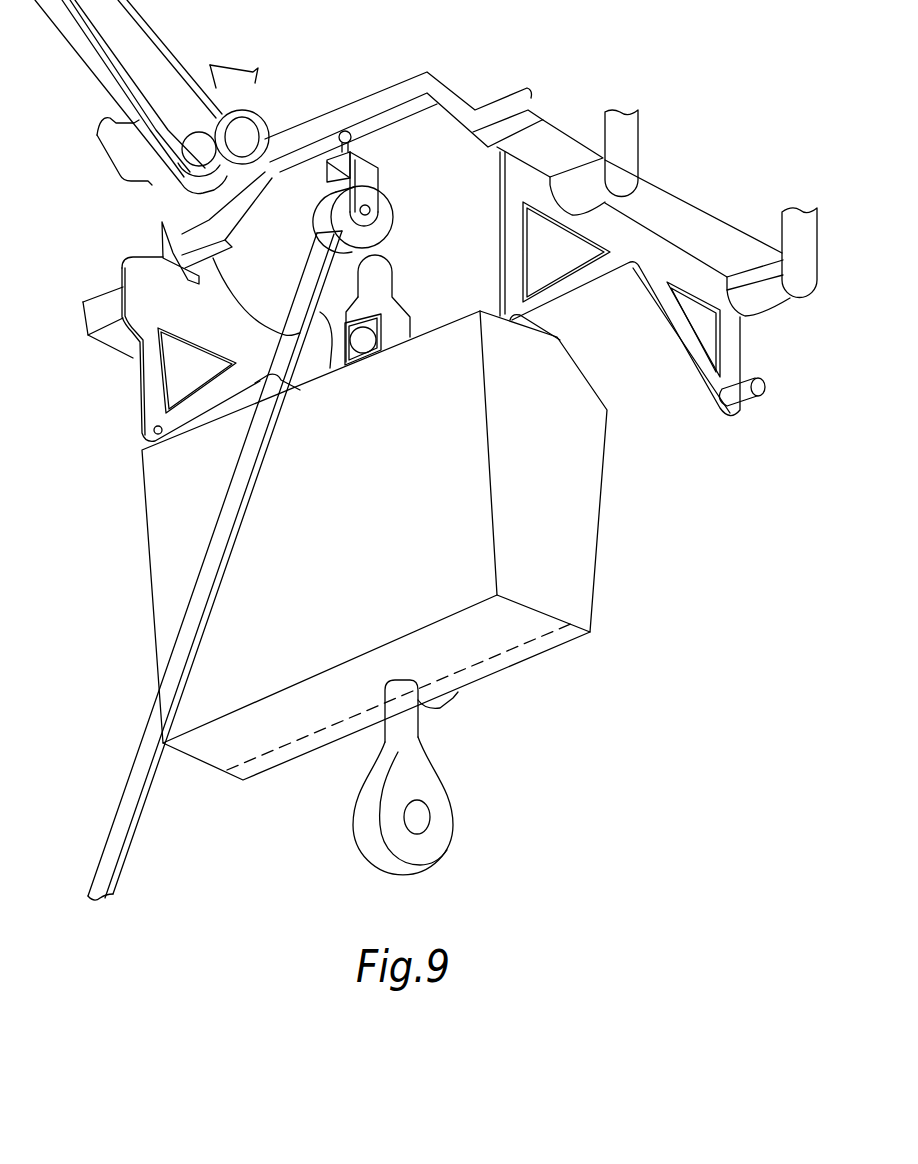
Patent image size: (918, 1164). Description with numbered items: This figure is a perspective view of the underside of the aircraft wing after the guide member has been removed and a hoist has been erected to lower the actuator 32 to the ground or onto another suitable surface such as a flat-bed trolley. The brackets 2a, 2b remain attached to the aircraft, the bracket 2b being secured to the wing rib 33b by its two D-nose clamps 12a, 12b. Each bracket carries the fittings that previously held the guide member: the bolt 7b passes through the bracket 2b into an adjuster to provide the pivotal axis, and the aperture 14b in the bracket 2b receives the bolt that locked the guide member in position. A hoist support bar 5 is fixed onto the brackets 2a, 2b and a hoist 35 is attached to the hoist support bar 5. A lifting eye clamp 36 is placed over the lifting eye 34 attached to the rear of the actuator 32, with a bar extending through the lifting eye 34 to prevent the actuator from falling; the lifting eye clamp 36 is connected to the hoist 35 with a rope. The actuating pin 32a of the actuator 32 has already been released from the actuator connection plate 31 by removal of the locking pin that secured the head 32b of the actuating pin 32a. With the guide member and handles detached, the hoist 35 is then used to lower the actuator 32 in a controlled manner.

The actuator connection plate 31 is at (96, 81).
The hoist support bar 5 is at (315, 124).
The bracket 2a is at (150, 283).
The bracket 2b is at (740, 338).
The lifting eye clamp 36 is at (392, 292).
The lifting eye 34 is at (359, 346).
The hoist 35 is at (246, 496).
The D-nose clamp 12a is at (610, 130).
The D-nose clamp 12b is at (793, 236).
The wing rib 33b is at (695, 218).
The aperture 14b is at (522, 318).
The bolt 7b is at (750, 398).
The actuator 32 is at (580, 597).
The actuating pin 32a is at (405, 738).
The head 32b is at (417, 820).